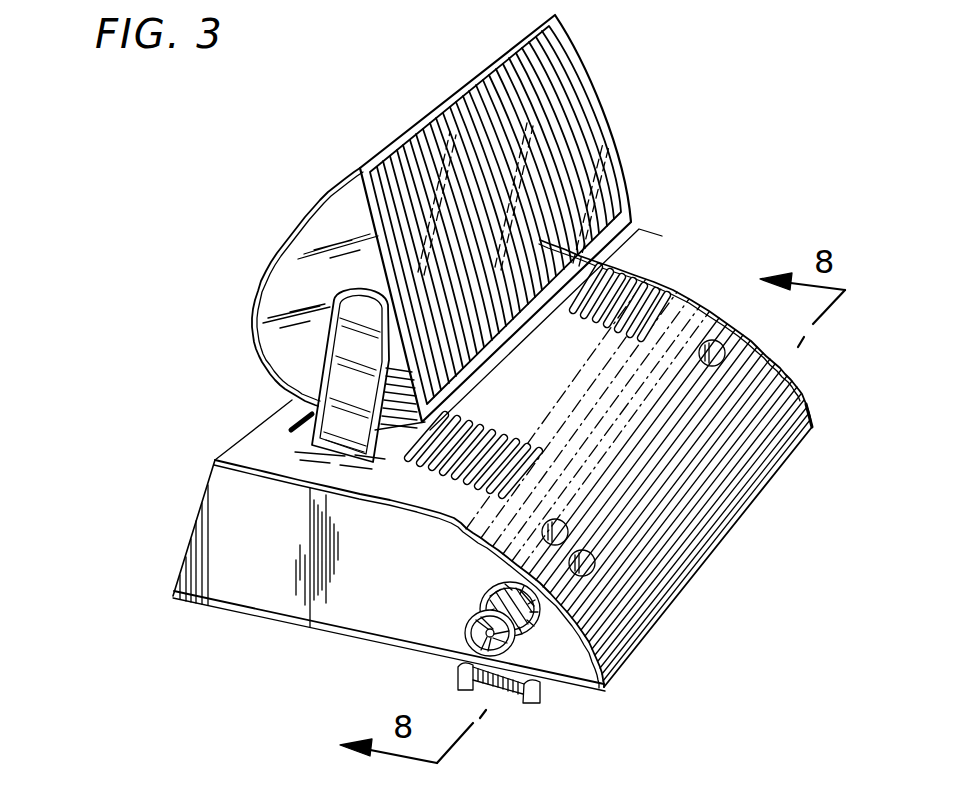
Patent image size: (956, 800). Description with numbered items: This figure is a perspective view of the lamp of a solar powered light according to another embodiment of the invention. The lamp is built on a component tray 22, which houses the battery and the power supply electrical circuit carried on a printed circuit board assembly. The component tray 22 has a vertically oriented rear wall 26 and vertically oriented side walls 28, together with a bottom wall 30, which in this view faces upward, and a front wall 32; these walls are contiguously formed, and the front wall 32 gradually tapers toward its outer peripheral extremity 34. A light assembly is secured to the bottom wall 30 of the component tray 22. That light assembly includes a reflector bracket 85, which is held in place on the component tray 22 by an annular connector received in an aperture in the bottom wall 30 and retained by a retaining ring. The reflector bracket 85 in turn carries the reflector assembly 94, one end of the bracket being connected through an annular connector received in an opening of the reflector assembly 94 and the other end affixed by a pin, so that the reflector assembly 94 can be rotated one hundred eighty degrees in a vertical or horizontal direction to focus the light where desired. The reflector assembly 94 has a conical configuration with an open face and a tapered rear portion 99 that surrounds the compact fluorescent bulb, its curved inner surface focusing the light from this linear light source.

The component tray 22 is at (207, 536).
The rear wall 26 is at (230, 454).
The side walls 28 is at (347, 600).
The bottom wall 30 is at (593, 322).
The front wall 32 is at (702, 512).
The outer peripheral extremity 34 is at (663, 613).
The reflector bracket 85 is at (310, 407).
The reflector assembly 94 is at (273, 256).
The tapered rear portion 99 is at (267, 308).